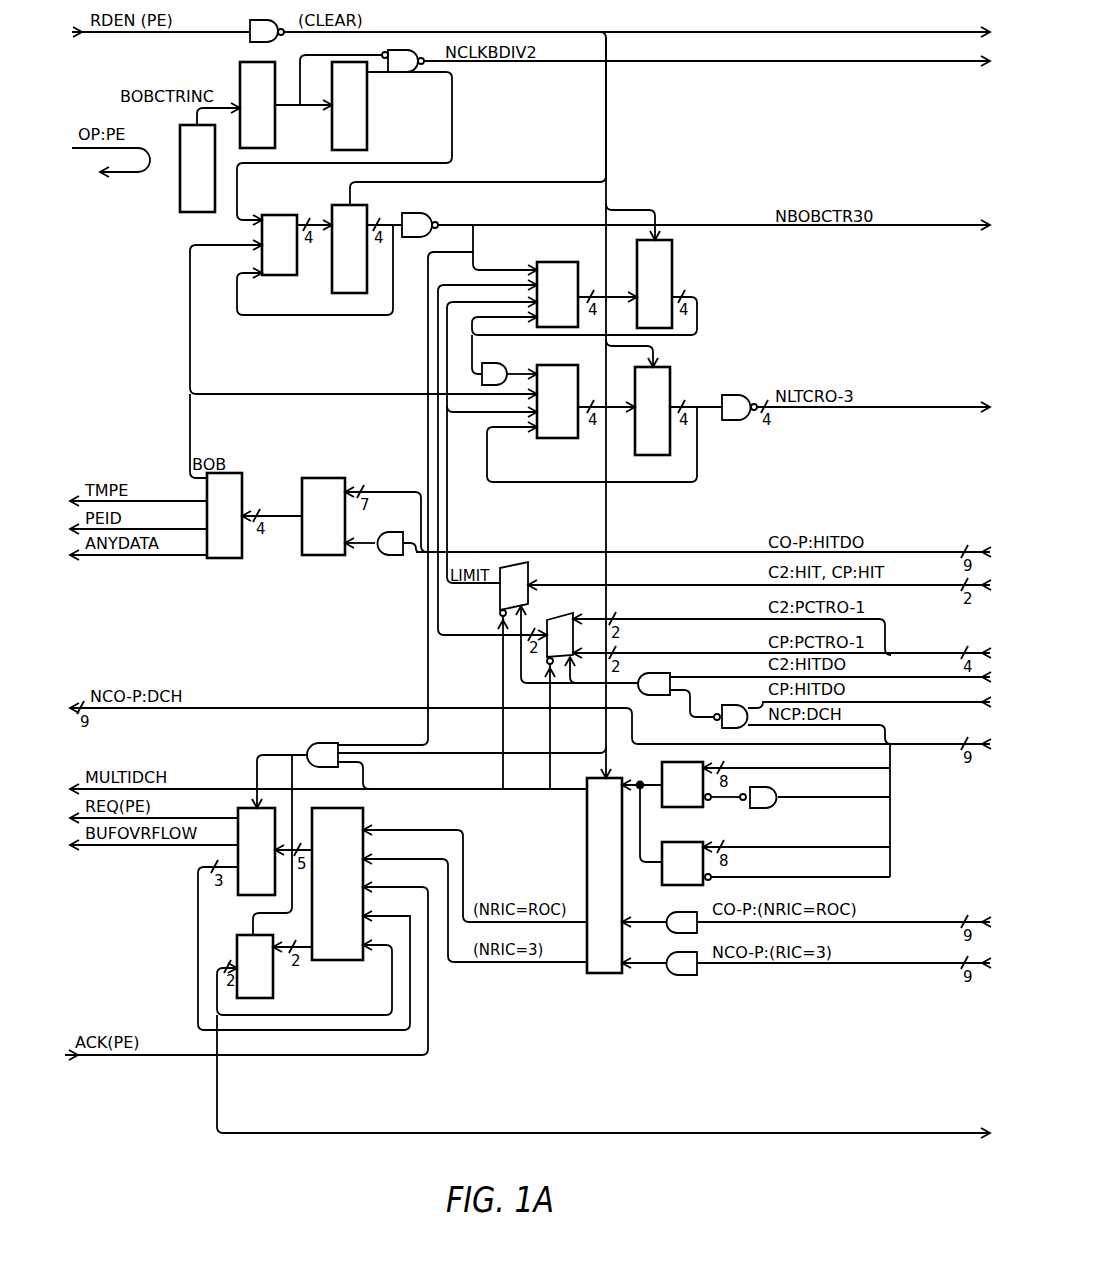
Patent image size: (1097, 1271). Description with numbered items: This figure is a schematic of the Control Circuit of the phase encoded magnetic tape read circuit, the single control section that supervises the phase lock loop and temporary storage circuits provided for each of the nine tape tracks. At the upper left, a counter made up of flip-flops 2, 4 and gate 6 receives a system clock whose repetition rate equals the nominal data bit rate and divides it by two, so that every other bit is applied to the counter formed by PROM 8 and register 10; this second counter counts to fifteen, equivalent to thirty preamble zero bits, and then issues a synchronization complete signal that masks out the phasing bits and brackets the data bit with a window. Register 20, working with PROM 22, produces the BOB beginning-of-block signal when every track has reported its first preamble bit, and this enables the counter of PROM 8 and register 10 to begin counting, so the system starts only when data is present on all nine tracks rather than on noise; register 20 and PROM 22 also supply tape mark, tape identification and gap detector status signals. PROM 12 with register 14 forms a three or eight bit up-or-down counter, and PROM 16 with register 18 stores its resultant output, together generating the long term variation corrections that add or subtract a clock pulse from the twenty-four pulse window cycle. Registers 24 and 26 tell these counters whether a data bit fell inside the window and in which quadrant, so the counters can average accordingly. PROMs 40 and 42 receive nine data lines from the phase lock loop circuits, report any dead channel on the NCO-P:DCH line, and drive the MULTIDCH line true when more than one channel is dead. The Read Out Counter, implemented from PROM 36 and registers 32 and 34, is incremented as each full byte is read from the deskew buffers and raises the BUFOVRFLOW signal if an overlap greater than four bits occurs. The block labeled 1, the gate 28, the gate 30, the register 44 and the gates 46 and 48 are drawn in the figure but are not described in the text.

The OP:PE latch 1 is at (180, 203).
The flip-flop 2 is at (240, 68).
The flip-flop 4 is at (370, 124).
The gate 6 is at (400, 73).
The PROM 8 is at (275, 215).
The register 10 is at (341, 205).
The PROM 12 is at (551, 262).
The register 14 is at (674, 264).
The PROM 16 is at (553, 365).
The register 18 is at (672, 380).
The register 20 is at (243, 483).
The PROM 22 is at (326, 478).
The register 24 is at (497, 603).
The register 26 is at (555, 616).
The AND gate 28 is at (652, 695).
The NAND gate 30 is at (732, 705).
The register 32 is at (238, 812).
The register 34 is at (237, 940).
The PROM 36 is at (363, 815).
The PROM 40 is at (662, 775).
The PROM 42 is at (695, 842).
The register 44 is at (587, 858).
The AND gate 46 is at (667, 912).
The AND gate 48 is at (667, 952).